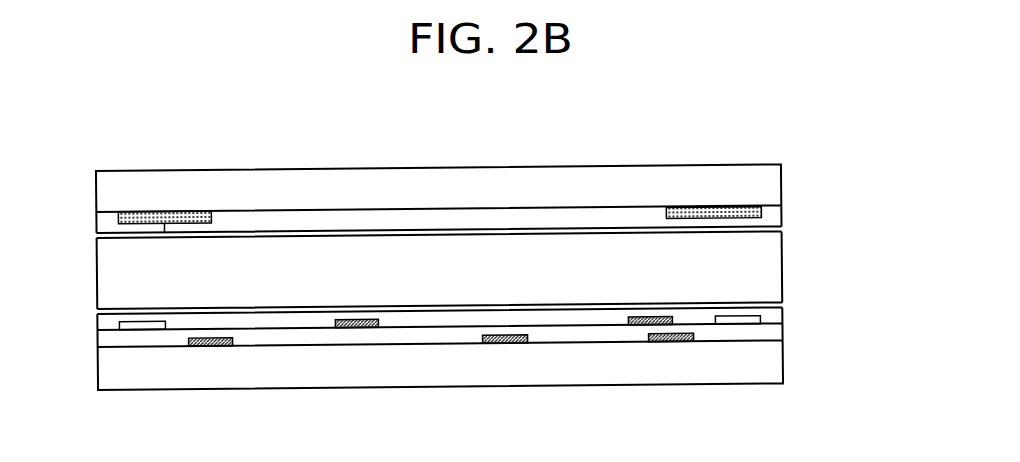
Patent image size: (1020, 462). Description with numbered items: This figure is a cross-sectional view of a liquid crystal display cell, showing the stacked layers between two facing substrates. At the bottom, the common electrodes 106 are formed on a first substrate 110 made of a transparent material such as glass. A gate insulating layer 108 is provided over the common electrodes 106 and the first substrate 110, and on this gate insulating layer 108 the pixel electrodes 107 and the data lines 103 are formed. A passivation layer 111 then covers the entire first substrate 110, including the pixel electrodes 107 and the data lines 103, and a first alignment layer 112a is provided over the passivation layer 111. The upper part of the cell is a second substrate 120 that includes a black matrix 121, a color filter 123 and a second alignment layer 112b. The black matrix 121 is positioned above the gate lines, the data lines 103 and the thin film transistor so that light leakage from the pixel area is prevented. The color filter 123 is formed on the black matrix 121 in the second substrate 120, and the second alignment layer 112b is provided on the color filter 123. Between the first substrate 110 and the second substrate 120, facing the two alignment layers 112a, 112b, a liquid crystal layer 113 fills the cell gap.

The data line 103 is at (738, 323).
The common electrode 106 is at (510, 344).
The pixel electrode 107 is at (362, 328).
The gate insulating layer 108 is at (778, 335).
The first substrate 110 is at (778, 362).
The passivation layer 111 is at (778, 318).
The first alignment layer 112a is at (780, 304).
The second alignment layer 112b is at (780, 229).
The liquid crystal layer 113 is at (778, 253).
The second substrate 120 is at (778, 183).
The black matrix 121 is at (713, 231).
The color filter 123 is at (778, 215).